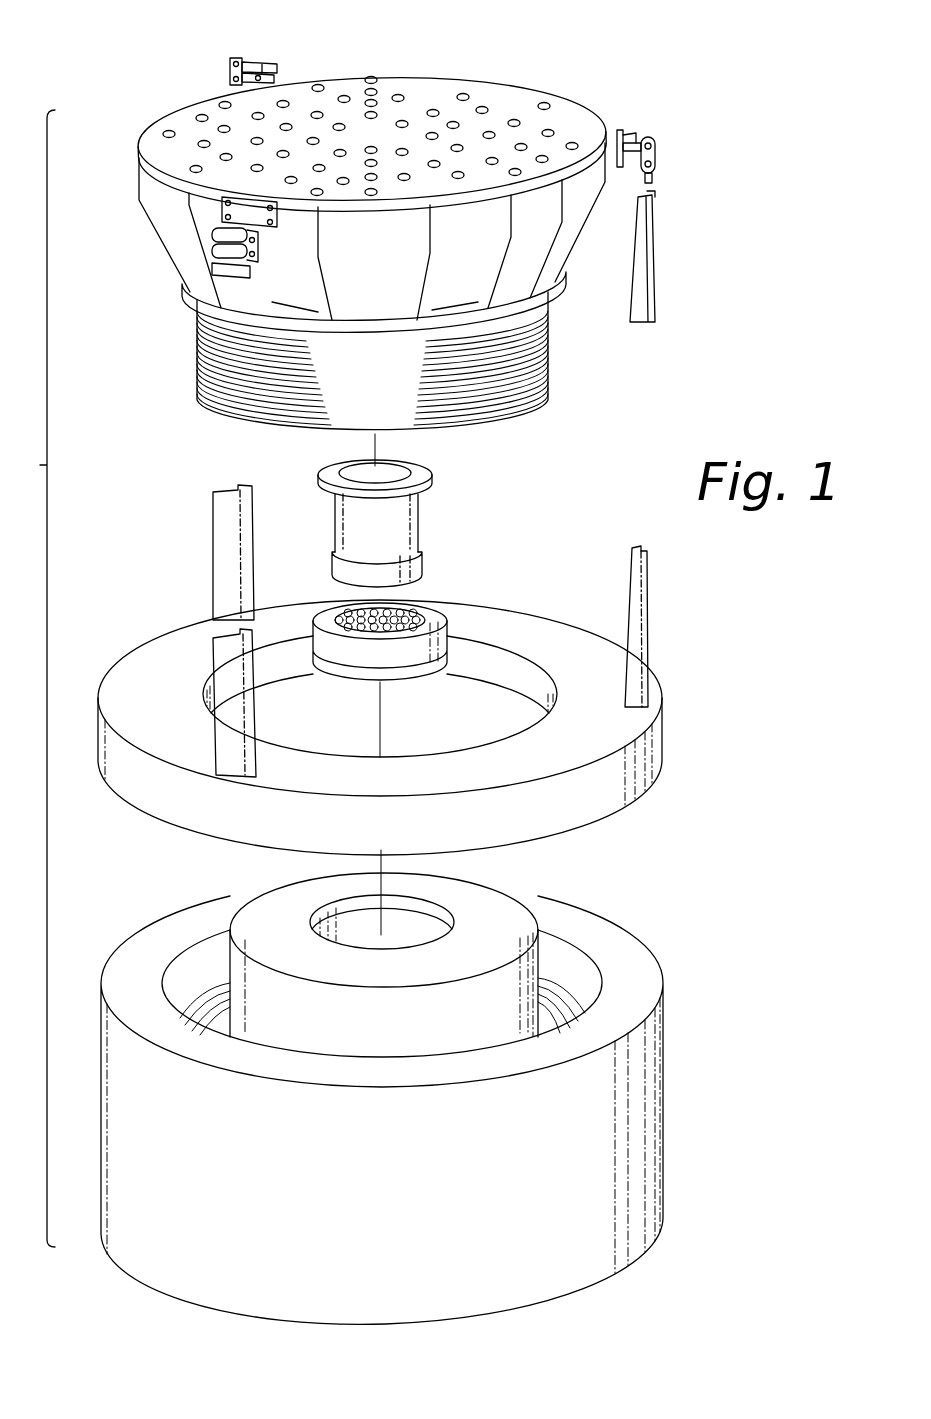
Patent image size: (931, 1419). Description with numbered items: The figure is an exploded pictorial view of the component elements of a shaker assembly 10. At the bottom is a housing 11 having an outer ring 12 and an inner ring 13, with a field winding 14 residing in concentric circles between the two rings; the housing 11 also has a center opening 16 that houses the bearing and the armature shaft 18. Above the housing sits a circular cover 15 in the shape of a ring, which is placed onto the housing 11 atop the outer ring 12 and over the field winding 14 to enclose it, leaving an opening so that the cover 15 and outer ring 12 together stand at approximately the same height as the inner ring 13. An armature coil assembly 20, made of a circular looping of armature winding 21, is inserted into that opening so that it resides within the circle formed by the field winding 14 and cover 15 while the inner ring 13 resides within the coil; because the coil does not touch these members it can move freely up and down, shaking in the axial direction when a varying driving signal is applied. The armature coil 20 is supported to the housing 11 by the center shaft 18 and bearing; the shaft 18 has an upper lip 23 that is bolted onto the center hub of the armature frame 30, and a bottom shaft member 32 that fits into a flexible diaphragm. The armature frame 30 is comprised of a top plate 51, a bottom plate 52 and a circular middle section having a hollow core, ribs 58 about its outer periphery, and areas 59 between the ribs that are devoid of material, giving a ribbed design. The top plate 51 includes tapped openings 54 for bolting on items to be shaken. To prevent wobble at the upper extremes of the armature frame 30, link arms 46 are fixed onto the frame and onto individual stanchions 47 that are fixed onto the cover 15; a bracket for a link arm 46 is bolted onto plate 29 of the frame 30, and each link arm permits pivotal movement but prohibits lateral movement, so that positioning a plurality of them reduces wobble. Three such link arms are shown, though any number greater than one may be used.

The shaker assembly 10 is at (168, 60).
The housing 11 is at (657, 1050).
The outer ring 12 is at (647, 963).
The inner ring 13 is at (502, 903).
The field winding 14 is at (558, 983).
The circular cover 15 is at (660, 717).
The center opening 16 is at (345, 928).
The armature shaft 18 is at (418, 517).
The armature coil assembly 20 is at (555, 388).
The armature winding 21 is at (552, 344).
The upper lip 23 is at (435, 480).
The plate 29 is at (234, 200).
The armature frame 30 is at (150, 232).
The bottom shaft member 32 is at (422, 562).
The link arm 46 is at (243, 60).
The stanchion 47 is at (653, 260).
The top plate 51 is at (138, 150).
The bottom plate 52 is at (560, 285).
The tapped openings 54 is at (512, 86).
The ribs 58 is at (318, 244).
The area between the ribs 59 is at (417, 292).